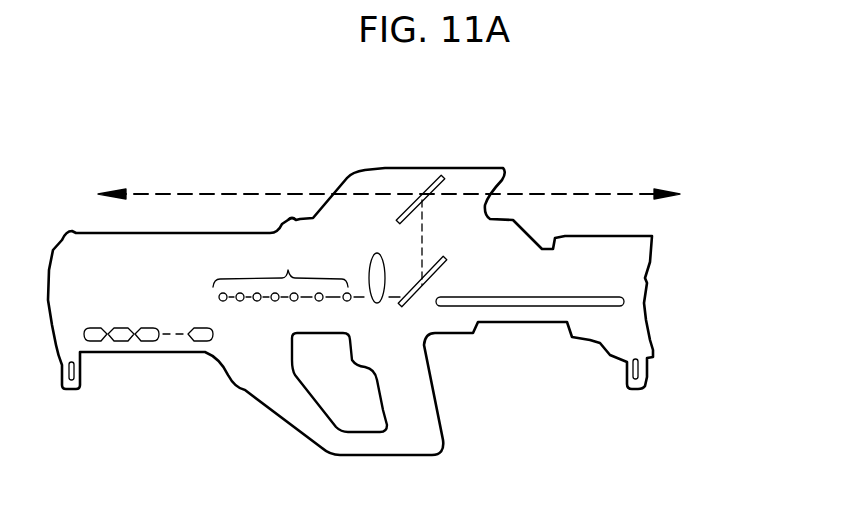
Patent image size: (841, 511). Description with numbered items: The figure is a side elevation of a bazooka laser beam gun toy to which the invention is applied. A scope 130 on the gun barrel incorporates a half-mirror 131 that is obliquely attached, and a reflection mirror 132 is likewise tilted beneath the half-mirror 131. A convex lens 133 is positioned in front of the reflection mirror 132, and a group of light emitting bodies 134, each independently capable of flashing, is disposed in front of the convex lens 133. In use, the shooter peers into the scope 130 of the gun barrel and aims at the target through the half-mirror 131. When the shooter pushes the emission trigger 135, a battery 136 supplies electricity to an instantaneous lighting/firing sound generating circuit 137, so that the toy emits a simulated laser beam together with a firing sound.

The scope 130 is at (487, 176).
The half-mirror 131 is at (400, 212).
The reflection mirror 132 is at (447, 262).
The convex lens 133 is at (383, 300).
The light emitting bodies 134 is at (306, 269).
The emission trigger 135 is at (362, 358).
The battery 136 is at (150, 341).
The instantaneous lighting/firing sound generating circuit 137 is at (542, 300).